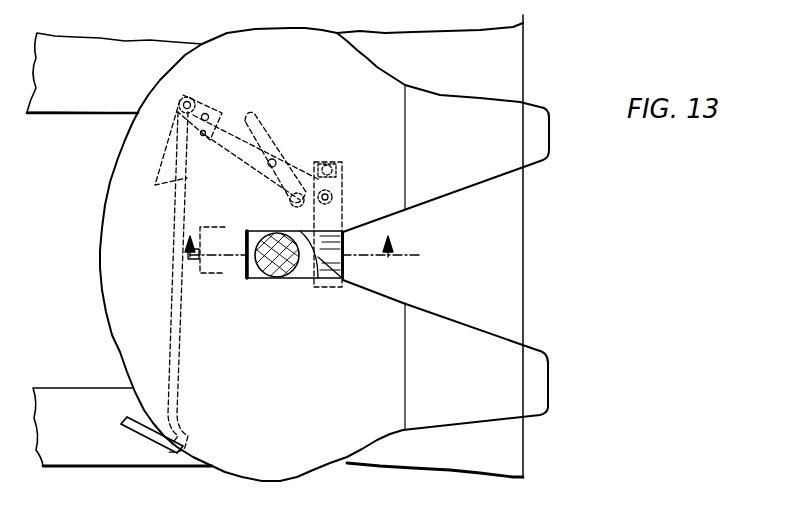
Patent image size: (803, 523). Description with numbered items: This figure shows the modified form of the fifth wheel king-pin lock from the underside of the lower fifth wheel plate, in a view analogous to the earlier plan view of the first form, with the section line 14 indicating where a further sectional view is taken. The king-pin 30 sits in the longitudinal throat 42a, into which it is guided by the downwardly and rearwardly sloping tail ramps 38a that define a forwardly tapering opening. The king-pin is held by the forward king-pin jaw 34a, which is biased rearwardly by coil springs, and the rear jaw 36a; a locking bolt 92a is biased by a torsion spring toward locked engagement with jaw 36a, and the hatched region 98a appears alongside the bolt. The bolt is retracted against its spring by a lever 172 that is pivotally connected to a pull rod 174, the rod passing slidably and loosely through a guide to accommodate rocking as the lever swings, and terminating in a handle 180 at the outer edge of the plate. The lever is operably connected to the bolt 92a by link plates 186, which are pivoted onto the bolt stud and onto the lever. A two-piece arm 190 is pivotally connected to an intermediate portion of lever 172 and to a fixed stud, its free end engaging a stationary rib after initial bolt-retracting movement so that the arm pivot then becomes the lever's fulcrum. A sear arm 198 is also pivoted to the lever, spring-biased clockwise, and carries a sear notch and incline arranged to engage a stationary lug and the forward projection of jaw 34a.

The section line 14- 14 is at (289, 250).
The king-pin 30 is at (275, 255).
The forward king-pin jaw 34a is at (255, 279).
The rear jaw 36a is at (305, 279).
The tail ramps 38a is at (513, 150).
The longitudinal throat 42a is at (344, 267).
The locking bolt 92a is at (344, 200).
The hatched member 98a is at (322, 280).
The lever 172 is at (227, 122).
The pull rod 174 is at (170, 333).
The terminal handle 180 is at (145, 443).
The link plates 186 is at (344, 170).
The two-piece arm 190 is at (258, 130).
The sear arm 198 is at (168, 167).